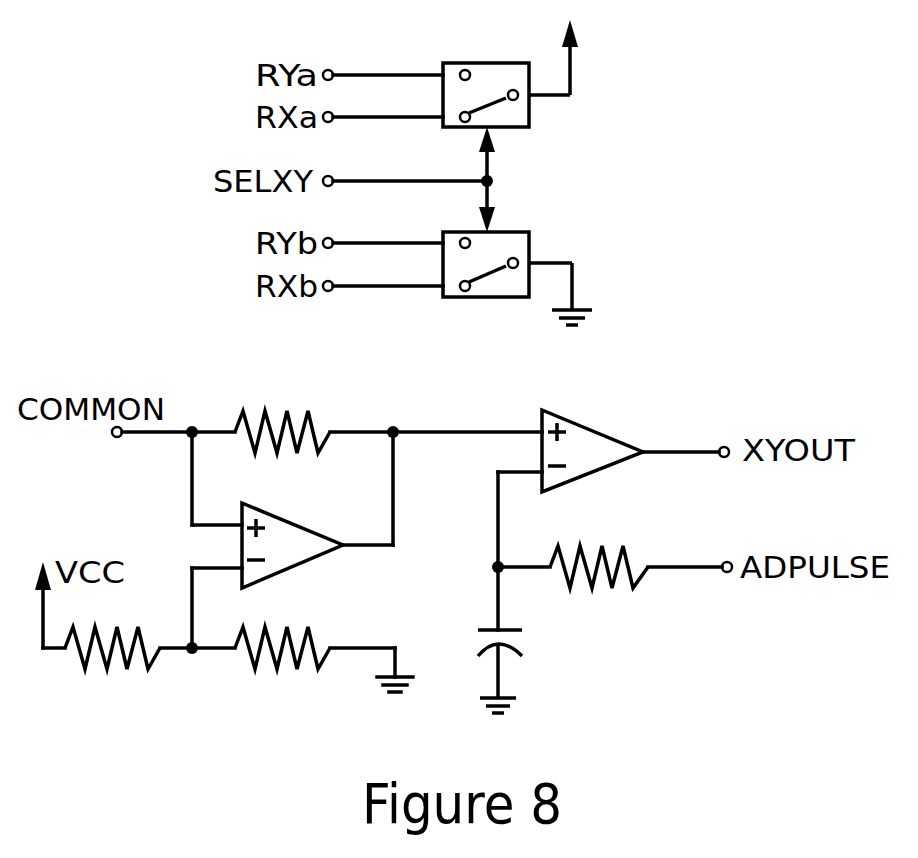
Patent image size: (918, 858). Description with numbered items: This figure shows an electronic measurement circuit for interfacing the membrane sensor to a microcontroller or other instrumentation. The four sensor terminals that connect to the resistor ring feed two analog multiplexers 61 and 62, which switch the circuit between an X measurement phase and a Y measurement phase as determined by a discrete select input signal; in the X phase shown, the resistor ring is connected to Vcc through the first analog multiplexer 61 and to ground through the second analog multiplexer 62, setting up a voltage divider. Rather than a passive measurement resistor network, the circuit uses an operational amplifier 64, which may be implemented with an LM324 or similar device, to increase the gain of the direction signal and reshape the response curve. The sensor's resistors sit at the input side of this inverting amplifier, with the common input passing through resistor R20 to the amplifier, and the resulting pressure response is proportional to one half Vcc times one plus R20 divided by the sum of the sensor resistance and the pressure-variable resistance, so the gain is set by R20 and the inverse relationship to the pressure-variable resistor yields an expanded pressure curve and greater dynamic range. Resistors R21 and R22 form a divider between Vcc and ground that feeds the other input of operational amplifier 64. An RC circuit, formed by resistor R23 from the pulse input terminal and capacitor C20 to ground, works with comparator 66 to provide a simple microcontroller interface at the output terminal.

The analog multiplexer 61 is at (533, 160).
The analog multiplexer 62 is at (536, 327).
The operational amplifier 64 is at (337, 594).
The comparator 66 is at (639, 498).
The gain resistor R20 is at (282, 450).
The resistor R21 is at (112, 667).
The resistor R22 is at (282, 667).
The resistor R23 is at (599, 586).
The capacitor C20 is at (531, 671).